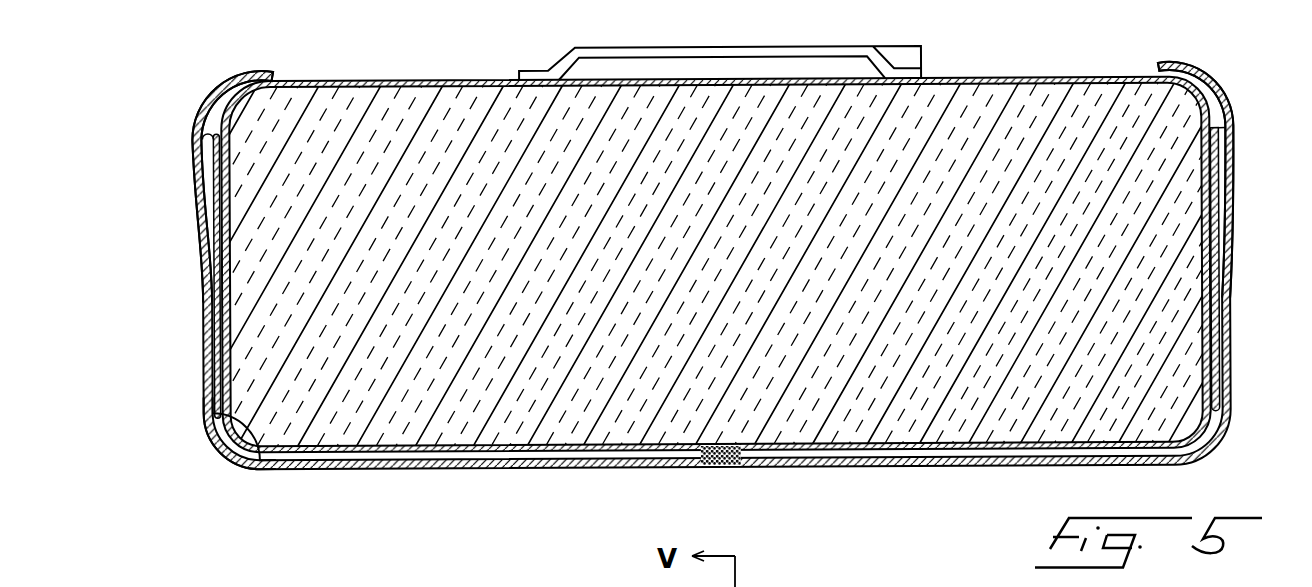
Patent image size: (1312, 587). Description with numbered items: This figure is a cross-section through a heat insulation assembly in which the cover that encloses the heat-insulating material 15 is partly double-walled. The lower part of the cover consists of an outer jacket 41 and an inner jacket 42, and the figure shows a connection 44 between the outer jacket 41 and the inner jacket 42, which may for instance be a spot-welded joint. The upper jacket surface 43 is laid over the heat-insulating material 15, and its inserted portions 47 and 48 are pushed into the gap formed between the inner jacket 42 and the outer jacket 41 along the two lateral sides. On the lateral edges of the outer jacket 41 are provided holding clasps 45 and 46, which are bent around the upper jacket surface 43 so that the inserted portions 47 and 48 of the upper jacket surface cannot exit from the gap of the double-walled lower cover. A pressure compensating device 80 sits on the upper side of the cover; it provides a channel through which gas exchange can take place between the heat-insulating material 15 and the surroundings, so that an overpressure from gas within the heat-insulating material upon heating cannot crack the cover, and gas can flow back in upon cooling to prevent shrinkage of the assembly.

The heat-insulating material 15 is at (410, 92).
The outer jacket 41 is at (360, 470).
The inner jacket 42 is at (232, 438).
The upper jacket surface 43 is at (1046, 78).
The connection 44 is at (738, 468).
The holding clasp 45 is at (1223, 94).
The holding clasp 46 is at (213, 84).
The inserted portion 47 is at (213, 232).
The inserted portion 48 is at (1212, 273).
The pressure compensating device 80 is at (575, 46).